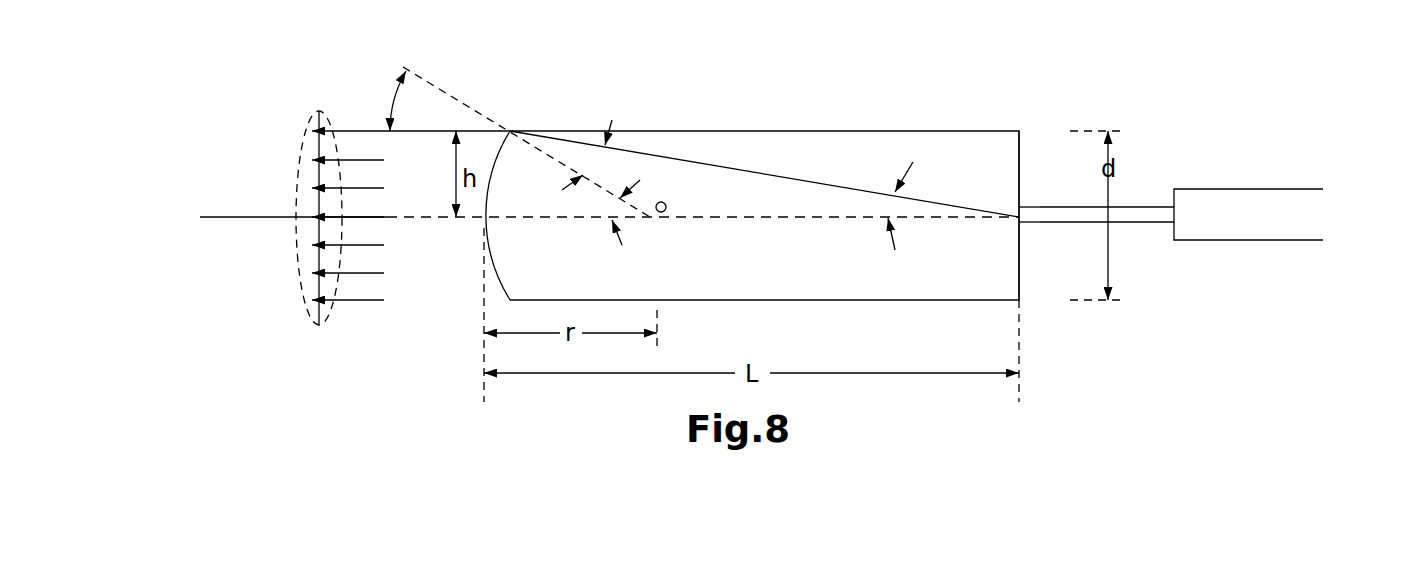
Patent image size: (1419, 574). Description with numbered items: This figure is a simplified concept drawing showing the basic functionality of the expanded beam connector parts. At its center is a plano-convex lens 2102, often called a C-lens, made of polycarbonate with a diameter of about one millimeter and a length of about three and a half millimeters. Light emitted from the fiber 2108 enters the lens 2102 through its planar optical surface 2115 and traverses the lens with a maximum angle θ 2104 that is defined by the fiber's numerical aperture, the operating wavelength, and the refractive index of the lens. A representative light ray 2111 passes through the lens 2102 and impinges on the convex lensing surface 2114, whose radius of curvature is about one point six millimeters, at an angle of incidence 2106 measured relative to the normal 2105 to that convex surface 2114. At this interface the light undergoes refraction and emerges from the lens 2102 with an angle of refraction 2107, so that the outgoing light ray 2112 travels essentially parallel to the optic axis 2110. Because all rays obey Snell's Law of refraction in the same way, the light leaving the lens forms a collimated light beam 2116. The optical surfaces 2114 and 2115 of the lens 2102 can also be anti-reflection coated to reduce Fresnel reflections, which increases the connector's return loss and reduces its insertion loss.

The plano-convex lens 2102 is at (758, 152).
The maximum angle θ 2104 is at (907, 210).
The normal to the convex surface 2105 is at (428, 80).
The angle of incidence 2106 is at (607, 152).
The angle of refraction 2107 is at (452, 115).
The fiber 2108 is at (1132, 215).
The optic axis 2110 is at (233, 217).
The light ray 2111 is at (830, 183).
The light ray 2112 is at (357, 131).
The convex lensing surface 2114 is at (495, 277).
The optical surface 2115 is at (1020, 273).
The collimated light beam 2116 is at (305, 304).